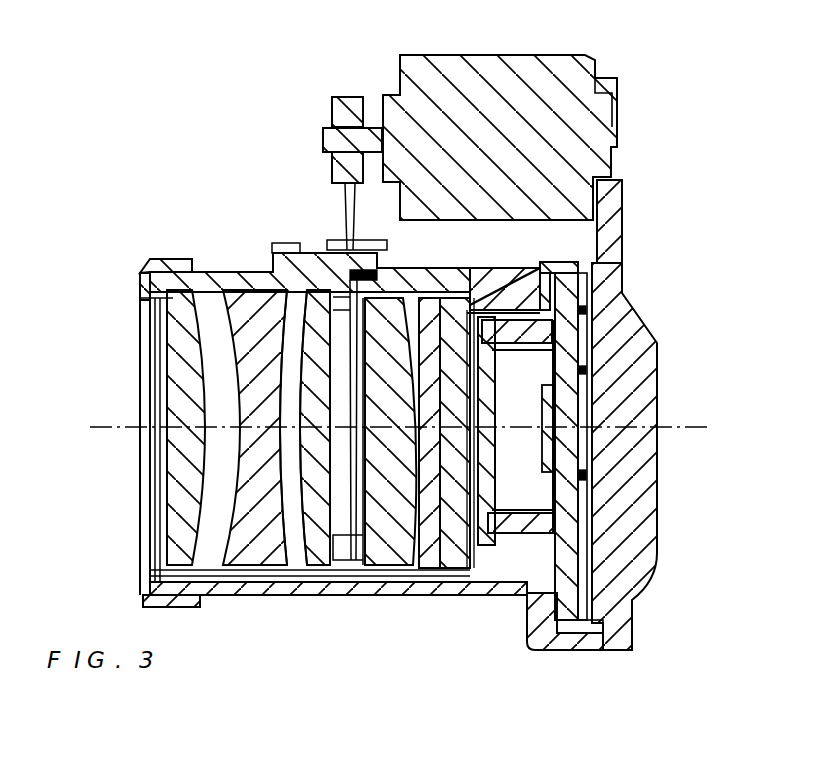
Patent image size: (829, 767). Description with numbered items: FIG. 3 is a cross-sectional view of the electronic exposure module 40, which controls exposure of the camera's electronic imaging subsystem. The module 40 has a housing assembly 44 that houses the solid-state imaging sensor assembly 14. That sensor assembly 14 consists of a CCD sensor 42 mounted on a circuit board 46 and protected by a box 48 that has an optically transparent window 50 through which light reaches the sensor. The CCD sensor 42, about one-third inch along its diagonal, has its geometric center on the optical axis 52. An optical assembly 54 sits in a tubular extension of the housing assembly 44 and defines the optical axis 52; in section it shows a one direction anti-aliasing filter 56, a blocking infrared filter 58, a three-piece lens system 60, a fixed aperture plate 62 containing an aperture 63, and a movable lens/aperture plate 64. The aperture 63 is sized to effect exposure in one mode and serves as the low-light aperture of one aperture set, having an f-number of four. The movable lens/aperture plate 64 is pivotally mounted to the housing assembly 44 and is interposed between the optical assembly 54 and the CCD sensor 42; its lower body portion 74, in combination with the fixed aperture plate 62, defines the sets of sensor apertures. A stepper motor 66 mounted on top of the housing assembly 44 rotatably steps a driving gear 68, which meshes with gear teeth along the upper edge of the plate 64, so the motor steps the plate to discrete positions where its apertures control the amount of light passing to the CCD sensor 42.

The electronic exposure module 40 is at (205, 224).
The optical assembly 54 is at (128, 343).
The three-piece lens system 60 is at (265, 547).
The aperture 63 is at (285, 533).
The fixed aperture plate 62 is at (340, 597).
The movable lens/aperture plate 64 is at (345, 225).
The blocking infrared filter 58 is at (433, 563).
The one direction anti-aliasing filter 56 is at (463, 552).
The optically transparent window 50 is at (493, 380).
The box 48 is at (523, 523).
The CCD sensor 42 is at (550, 470).
The circuit board 46 is at (587, 600).
The solid-state imaging sensor assembly 14 is at (604, 327).
The housing assembly 44 is at (615, 200).
The lower body portion 74 is at (497, 284).
The stepper motor 66 is at (532, 58).
The driving gear 68 is at (350, 97).
The optical axis 52 is at (677, 425).